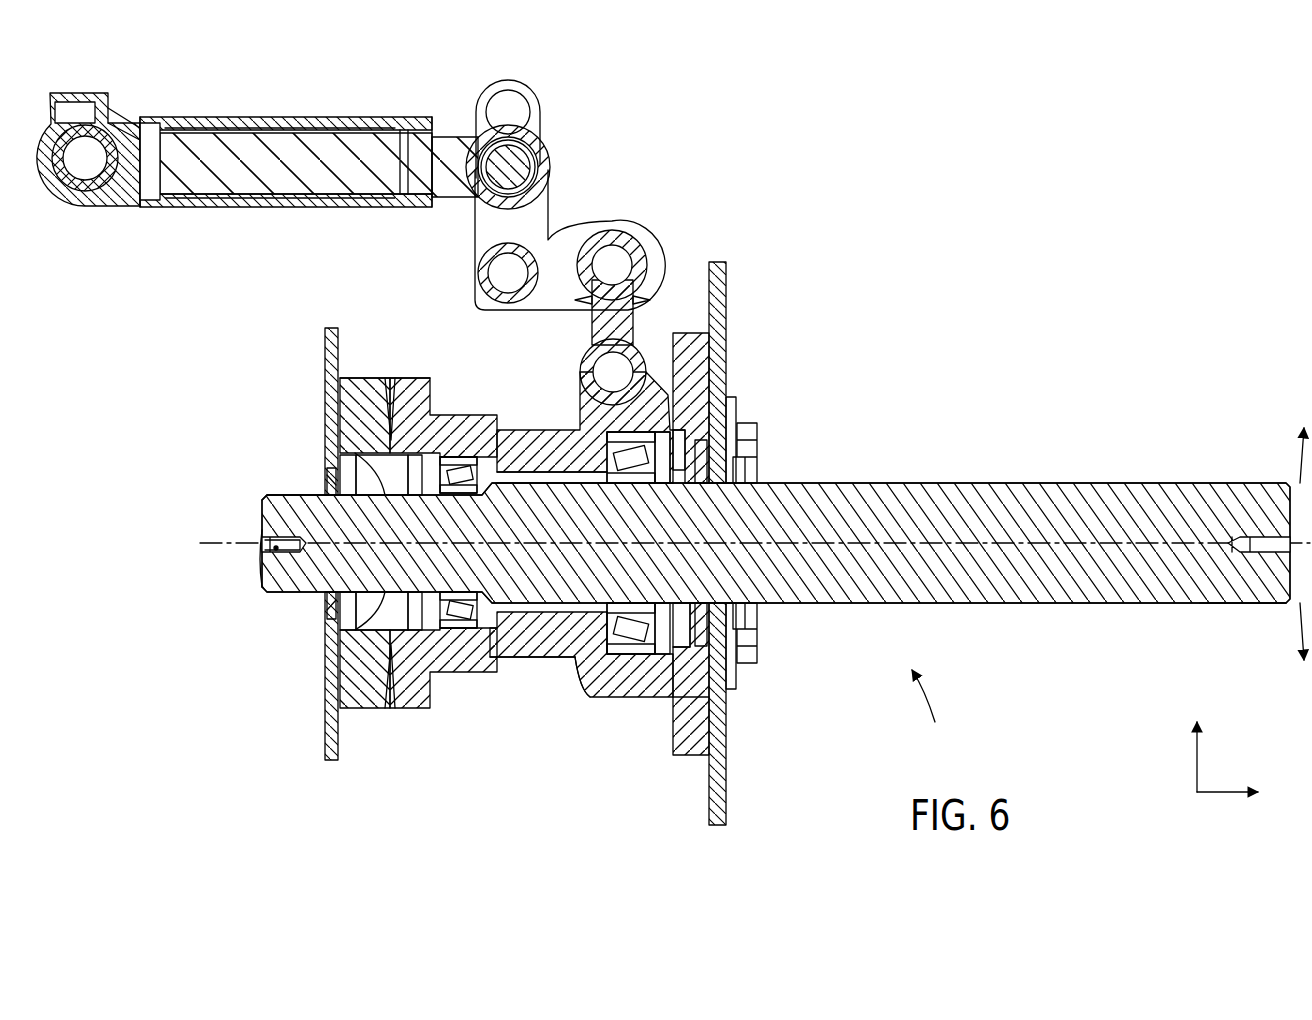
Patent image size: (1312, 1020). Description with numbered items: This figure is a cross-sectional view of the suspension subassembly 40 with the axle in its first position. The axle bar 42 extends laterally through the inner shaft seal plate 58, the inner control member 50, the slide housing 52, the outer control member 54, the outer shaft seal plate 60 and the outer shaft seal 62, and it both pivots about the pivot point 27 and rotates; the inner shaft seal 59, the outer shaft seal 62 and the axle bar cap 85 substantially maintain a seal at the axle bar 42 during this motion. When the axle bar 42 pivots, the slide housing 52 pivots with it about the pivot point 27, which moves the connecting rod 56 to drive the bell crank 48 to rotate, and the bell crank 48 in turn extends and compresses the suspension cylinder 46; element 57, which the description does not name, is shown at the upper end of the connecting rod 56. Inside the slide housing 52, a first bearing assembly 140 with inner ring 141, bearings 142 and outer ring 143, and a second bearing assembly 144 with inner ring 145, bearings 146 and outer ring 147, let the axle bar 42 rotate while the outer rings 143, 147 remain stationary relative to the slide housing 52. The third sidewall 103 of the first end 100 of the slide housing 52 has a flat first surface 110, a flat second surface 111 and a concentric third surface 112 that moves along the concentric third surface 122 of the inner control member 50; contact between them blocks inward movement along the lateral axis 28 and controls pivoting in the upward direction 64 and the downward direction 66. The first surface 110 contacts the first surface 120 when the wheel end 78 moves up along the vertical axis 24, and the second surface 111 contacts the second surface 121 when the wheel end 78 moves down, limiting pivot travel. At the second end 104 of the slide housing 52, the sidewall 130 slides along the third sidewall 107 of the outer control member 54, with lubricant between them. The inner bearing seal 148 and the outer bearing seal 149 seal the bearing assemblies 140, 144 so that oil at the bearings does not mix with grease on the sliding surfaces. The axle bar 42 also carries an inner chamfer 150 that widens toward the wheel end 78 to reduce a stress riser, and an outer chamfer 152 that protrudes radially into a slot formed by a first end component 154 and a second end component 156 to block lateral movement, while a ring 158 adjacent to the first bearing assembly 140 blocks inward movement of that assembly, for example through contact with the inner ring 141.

The vertical axis 24 is at (1195, 760).
The pivot point 27 is at (290, 550).
The lateral axis 28 is at (1225, 792).
The suspension subassembly 40 is at (932, 709).
The axle bar 42 is at (1003, 608).
The suspension cylinder 46 is at (275, 118).
The bell crank 48 is at (535, 92).
The inner control member 50 is at (358, 712).
The slide housing 52 is at (545, 658).
The outer control member 54 is at (697, 780).
The connecting rod 56 is at (650, 315).
The pin 57 is at (645, 295).
The inner shaft seal plate 58 is at (325, 360).
The inner shaft seal 59 is at (333, 488).
The outer shaft seal plate 60 is at (726, 290).
The outer shaft seal 62 is at (758, 460).
The upward direction 64 is at (1300, 455).
The downward direction 66 is at (1300, 650).
The wheel end 78 is at (1230, 617).
The axle bar cap 85 is at (262, 583).
The first end 100 is at (412, 531).
The third sidewall 103 is at (385, 352).
The second end 104 is at (656, 715).
The third sidewall 107 is at (690, 400).
The first surface 110 is at (392, 440).
The second surface 111 is at (395, 712).
The third surface 112 is at (415, 430).
The first surface 120 is at (380, 440).
The second surface 121 is at (390, 700).
The third surface 122 is at (360, 478).
The sidewall 130 is at (560, 440).
The first bearing assembly 140 is at (462, 462).
The inner ring 141 is at (428, 505).
The bearings 142 is at (462, 455).
The outer ring 143 is at (452, 452).
The second bearing assembly 144 is at (615, 488).
The inner ring 145 is at (630, 605).
The bearings 146 is at (590, 690).
The outer ring 147 is at (605, 658).
The inner bearing seal 148 is at (270, 505).
The outer bearing seal 149 is at (731, 430).
The inner chamfer 150 is at (497, 492).
The outer chamfer 152 is at (690, 495).
The first end component 154 is at (668, 508).
The second end component 156 is at (722, 495).
The ring 158 is at (330, 605).